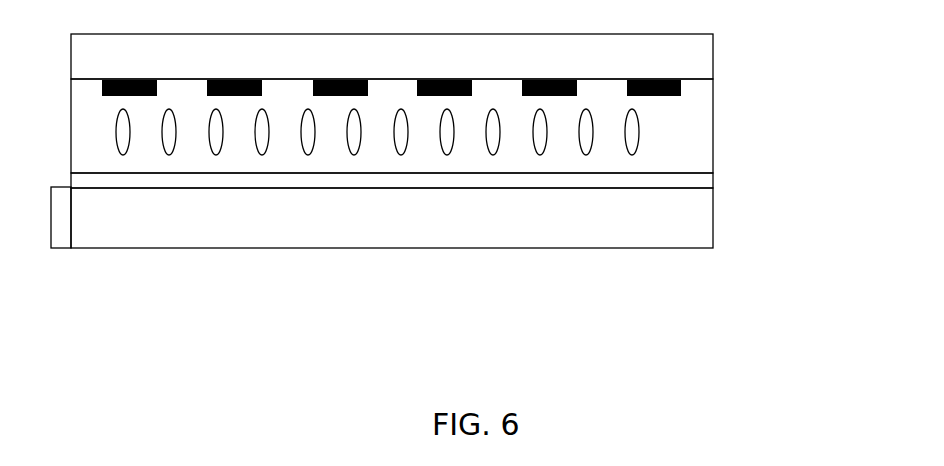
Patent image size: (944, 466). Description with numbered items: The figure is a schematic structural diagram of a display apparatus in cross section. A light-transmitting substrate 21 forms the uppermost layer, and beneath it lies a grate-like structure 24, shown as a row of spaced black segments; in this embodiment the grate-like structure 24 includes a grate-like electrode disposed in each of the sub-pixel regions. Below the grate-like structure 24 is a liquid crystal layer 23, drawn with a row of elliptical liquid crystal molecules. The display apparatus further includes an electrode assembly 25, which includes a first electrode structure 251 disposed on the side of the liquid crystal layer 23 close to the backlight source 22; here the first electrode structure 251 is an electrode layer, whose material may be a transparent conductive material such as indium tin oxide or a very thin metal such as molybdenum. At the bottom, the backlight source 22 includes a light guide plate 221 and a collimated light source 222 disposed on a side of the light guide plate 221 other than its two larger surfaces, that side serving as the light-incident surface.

The light-transmitting substrate 21 is at (71, 64).
The backlight source 22 is at (381, 284).
The light guide plate 221 is at (120, 248).
The collimated light source 222 is at (61, 248).
The liquid crystal layer 23 is at (713, 109).
The grate-like structure 24 is at (681, 89).
The electrode assembly 25 is at (471, 177).
The first electrode structure 251 is at (713, 177).